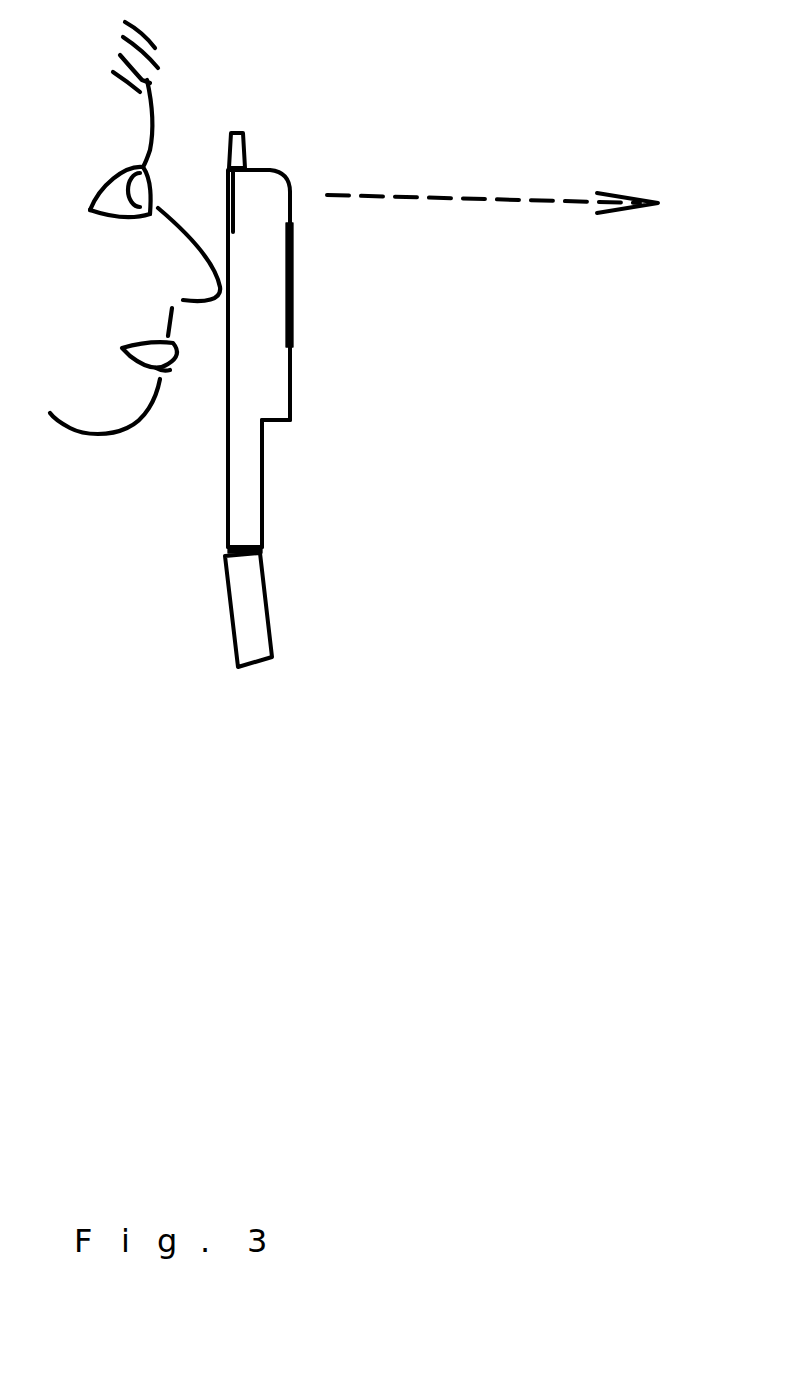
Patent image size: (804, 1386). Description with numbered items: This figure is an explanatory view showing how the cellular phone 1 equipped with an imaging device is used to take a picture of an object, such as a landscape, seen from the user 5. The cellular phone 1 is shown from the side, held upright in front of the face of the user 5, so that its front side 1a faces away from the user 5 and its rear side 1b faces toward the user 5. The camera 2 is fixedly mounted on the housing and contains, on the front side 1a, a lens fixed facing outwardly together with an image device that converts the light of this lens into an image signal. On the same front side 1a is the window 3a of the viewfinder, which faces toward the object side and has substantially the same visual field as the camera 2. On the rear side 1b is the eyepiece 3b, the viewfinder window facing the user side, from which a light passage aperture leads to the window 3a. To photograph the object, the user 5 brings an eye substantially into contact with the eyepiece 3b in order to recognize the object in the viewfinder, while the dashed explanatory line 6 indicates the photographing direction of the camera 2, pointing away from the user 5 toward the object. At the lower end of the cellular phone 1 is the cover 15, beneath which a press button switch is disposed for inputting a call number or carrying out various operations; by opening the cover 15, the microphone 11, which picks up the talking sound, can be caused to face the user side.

The cellular phone 1 is at (268, 398).
The front side 1a is at (286, 367).
The rear side 1b is at (226, 508).
The camera 2 is at (294, 200).
The window 3a is at (291, 193).
The eyepiece 3b is at (226, 183).
The user 5 is at (173, 177).
The explanatory line 6 is at (498, 197).
The microphone 11 is at (223, 577).
The cover 15 is at (269, 609).